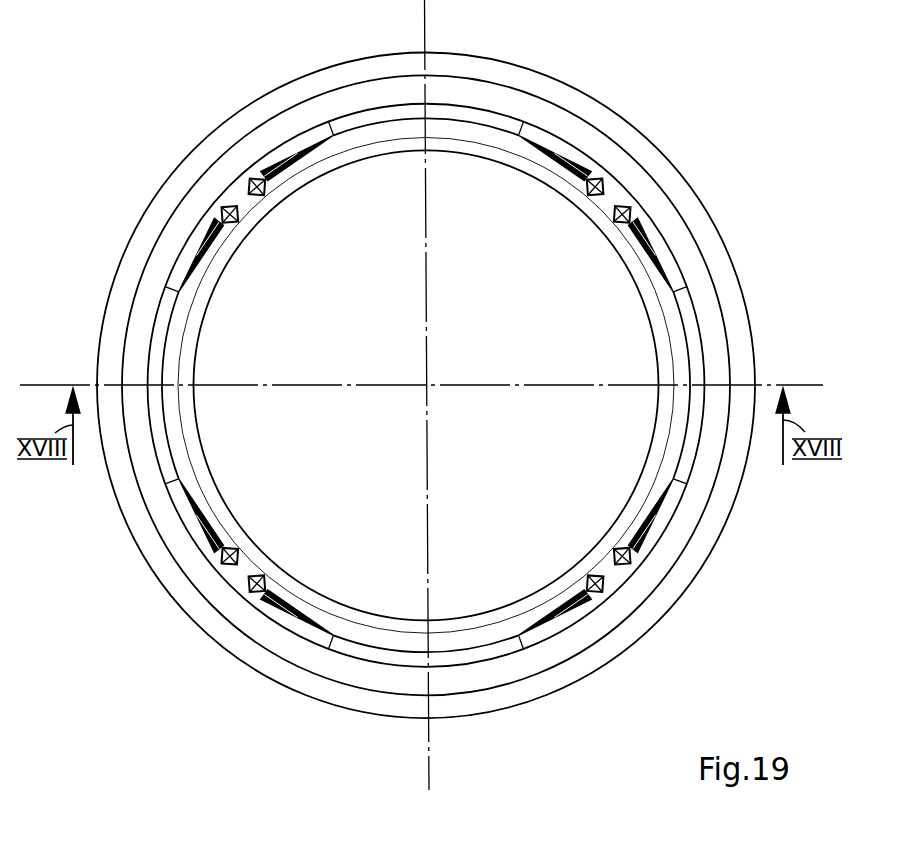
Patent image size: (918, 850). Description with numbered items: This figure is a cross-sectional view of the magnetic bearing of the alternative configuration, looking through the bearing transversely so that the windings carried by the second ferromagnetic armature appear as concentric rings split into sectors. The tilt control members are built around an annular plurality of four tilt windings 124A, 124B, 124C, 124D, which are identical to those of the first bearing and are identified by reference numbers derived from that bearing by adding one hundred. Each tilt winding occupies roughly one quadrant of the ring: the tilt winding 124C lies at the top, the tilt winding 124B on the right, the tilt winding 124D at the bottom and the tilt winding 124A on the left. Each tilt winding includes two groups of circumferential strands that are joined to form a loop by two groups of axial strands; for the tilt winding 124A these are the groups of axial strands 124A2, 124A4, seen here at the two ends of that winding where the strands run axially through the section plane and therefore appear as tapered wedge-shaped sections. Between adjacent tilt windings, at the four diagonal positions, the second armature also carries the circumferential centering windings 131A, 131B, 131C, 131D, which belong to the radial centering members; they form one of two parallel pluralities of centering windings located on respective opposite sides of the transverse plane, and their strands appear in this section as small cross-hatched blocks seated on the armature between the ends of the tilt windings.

The tilt winding 124A is at (158, 467).
The tilt winding 124B is at (700, 327).
The tilt winding 124C is at (481, 107).
The tilt winding 124D is at (489, 665).
The group of axial strands 124A2 is at (188, 230).
The group of axial strands 124A4 is at (195, 543).
The circumferential centering winding 131A is at (238, 223).
The circumferential centering winding 131B is at (612, 226).
The circumferential centering winding 131C is at (588, 199).
The circumferential centering winding 131D is at (258, 582).